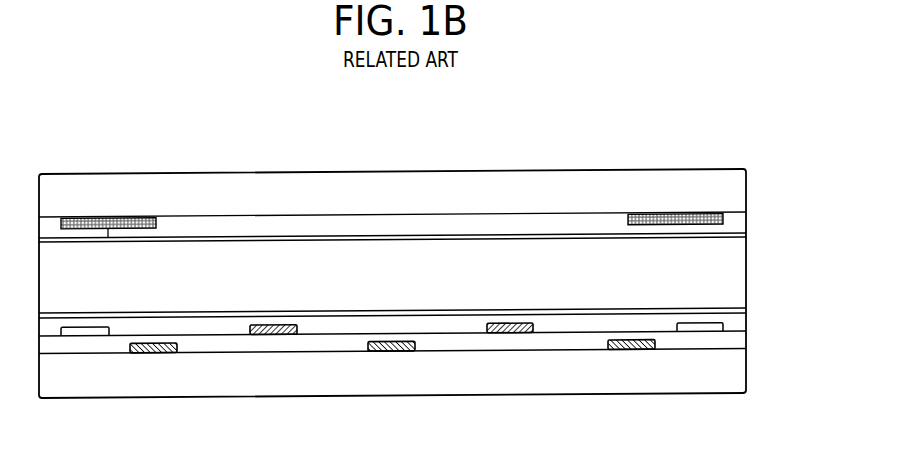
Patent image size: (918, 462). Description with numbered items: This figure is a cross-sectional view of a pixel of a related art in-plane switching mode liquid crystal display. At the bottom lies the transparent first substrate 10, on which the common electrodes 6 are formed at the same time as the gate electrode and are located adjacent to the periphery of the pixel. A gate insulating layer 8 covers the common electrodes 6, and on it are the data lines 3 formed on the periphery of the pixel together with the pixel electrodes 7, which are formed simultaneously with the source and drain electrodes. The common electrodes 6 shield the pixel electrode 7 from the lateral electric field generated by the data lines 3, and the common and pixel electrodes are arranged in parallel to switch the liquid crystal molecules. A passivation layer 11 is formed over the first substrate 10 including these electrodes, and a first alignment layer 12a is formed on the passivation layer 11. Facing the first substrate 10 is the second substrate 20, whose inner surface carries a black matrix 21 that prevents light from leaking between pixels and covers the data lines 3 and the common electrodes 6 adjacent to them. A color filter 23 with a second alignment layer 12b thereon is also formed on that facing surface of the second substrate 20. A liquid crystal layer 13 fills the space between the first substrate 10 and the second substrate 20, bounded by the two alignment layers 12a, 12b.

The second substrate 20 is at (739, 185).
The color filter 23 is at (739, 222).
The black matrix 21 is at (676, 233).
The second alignment layer 12b is at (743, 236).
The liquid crystal layer 13 is at (739, 275).
The first alignment layer 12a is at (742, 309).
The passivation layer 11 is at (739, 323).
The data line 3 is at (698, 333).
The pixel electrode 7 is at (517, 333).
The gate insulating layer 8 is at (739, 340).
The common electrode 6 is at (632, 349).
The first substrate 10 is at (739, 370).